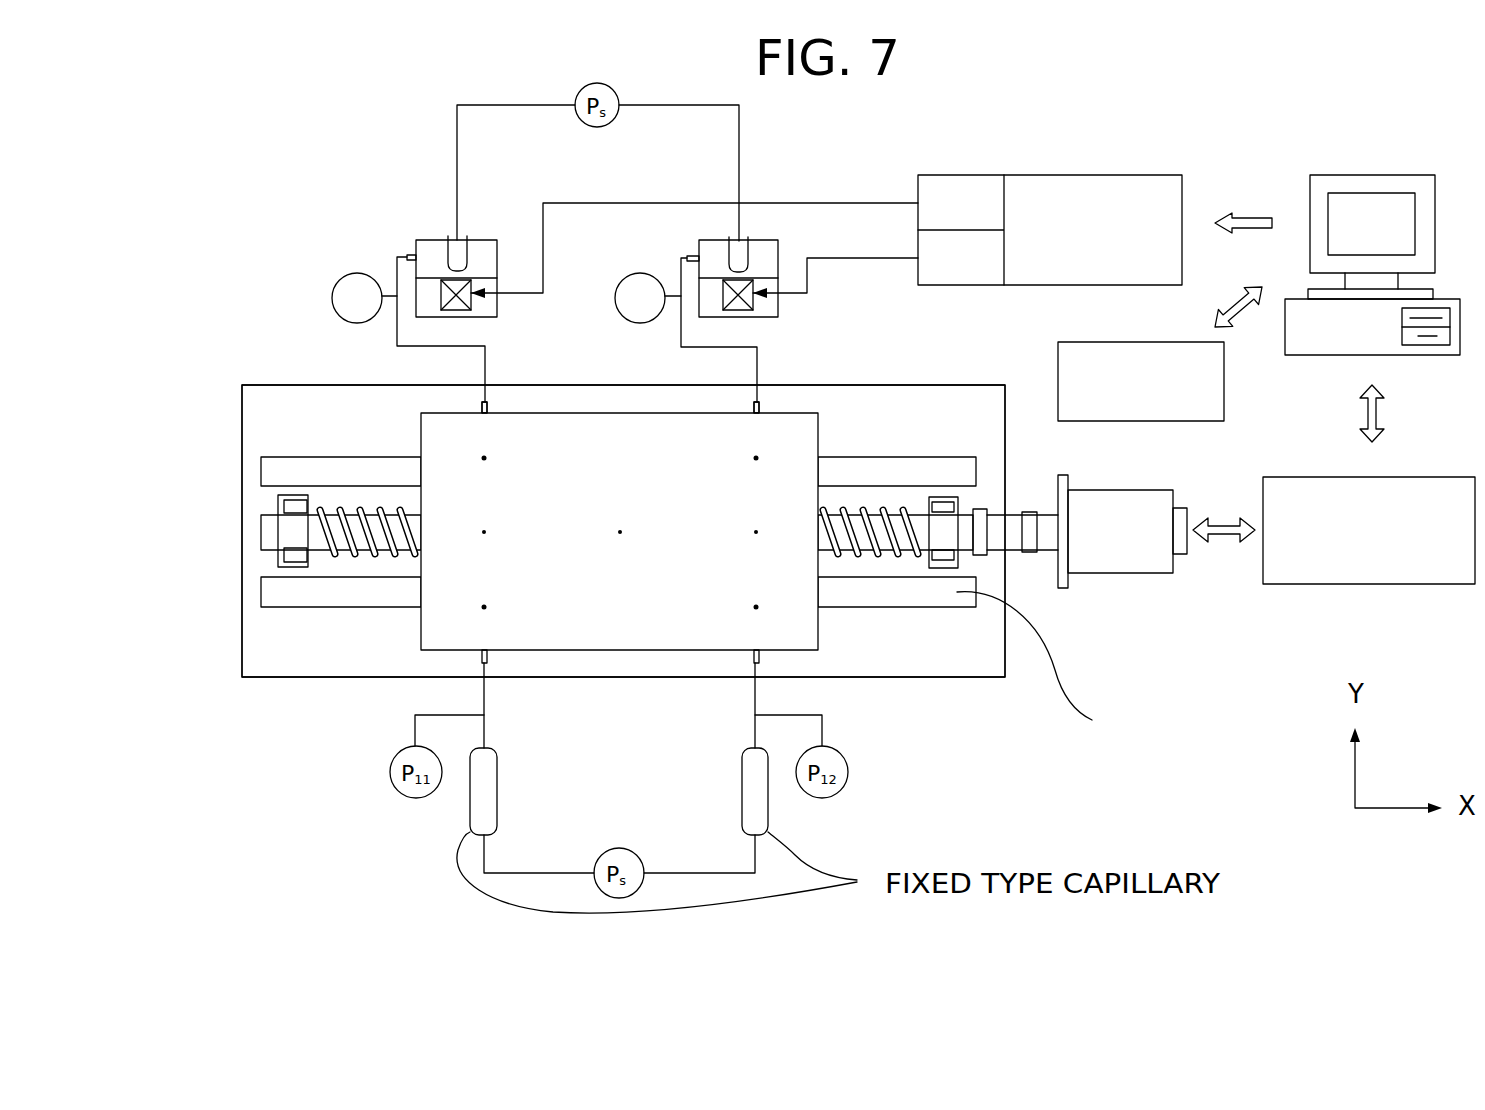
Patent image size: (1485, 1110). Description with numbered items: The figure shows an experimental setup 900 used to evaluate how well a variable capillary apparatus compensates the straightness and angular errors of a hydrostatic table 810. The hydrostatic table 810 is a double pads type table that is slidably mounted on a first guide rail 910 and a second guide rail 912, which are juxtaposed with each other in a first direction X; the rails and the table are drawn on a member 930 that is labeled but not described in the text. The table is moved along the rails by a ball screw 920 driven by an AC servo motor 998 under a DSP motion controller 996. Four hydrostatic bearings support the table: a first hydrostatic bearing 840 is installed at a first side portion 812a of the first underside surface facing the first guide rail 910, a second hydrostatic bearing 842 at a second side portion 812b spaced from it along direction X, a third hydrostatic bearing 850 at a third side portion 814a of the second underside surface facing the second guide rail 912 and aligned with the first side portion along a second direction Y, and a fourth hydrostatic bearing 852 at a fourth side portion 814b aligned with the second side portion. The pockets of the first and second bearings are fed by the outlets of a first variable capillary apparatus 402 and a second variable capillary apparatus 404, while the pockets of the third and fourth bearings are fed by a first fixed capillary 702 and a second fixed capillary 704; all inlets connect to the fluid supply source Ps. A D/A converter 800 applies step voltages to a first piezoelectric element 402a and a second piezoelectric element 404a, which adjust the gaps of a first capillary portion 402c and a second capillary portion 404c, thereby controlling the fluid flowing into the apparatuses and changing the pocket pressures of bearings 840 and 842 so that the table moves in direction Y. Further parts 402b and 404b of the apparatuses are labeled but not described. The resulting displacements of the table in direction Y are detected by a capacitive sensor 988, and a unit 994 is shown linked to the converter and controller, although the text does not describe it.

The experimental setup 900 is at (1008, 100).
The first variable capillary apparatus 402 is at (390, 257).
The first piezoelectric element 402a is at (457, 282).
The supply port of first servo valve 402b is at (413, 256).
The first capillary portion 402c is at (445, 274).
The second variable capillary apparatus 404 is at (787, 237).
The second piezoelectric element 404a is at (740, 273).
The supply port of second servo valve 404b is at (695, 255).
The second capillary portion 404c is at (737, 282).
The D/A converter 800 is at (1102, 183).
The hydrostatic table 810 is at (668, 628).
The first side portion 812a is at (478, 410).
The second side portion 812b is at (762, 410).
The third side portion 814a is at (480, 662).
The fourth side portion 814b is at (761, 663).
The first hydrostatic bearing 840 is at (484, 458).
The second hydrostatic bearing 842 is at (756, 458).
The third hydrostatic bearing 850 is at (484, 607).
The fourth hydrostatic bearing 852 is at (756, 607).
The first guide rail 910 is at (297, 470).
The second guide rail 912 is at (288, 592).
The ball screw 920 is at (275, 532).
The bed 930 is at (282, 640).
The capacitive sensor 988 is at (1225, 380).
The computer 994 is at (1377, 183).
The DSP motion controller 996 is at (1295, 584).
The AC servo motor 998 is at (1120, 573).
The first fixed capillary 702 is at (463, 803).
The second fixed capillary 704 is at (773, 805).